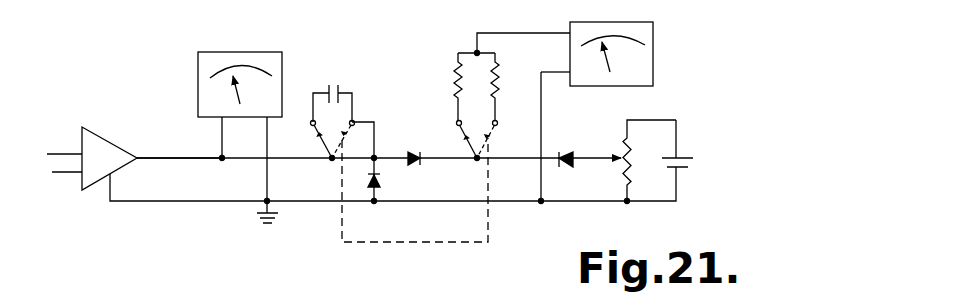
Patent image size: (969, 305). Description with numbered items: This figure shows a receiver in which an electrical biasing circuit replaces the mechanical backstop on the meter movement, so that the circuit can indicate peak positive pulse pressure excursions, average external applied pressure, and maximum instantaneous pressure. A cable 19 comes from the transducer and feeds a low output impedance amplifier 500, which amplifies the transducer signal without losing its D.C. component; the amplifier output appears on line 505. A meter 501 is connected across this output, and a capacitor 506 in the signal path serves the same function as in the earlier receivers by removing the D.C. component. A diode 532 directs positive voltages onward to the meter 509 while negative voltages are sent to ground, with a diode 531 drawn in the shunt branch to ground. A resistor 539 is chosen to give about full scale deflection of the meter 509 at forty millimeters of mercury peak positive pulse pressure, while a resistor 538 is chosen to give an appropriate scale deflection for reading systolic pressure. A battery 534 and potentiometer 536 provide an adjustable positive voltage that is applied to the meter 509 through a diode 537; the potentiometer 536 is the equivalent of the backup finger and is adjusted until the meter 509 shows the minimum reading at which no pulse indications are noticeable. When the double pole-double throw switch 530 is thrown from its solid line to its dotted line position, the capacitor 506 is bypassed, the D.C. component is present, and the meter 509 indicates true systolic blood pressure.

The cable 19 is at (72, 157).
The low output impedance amplifier 500 is at (105, 148).
The meter 501 is at (192, 71).
The output line 505 is at (137, 157).
The capacitor 506 is at (338, 93).
The meter 509 is at (660, 59).
The double pole-double throw switch 530 is at (332, 222).
The diode 531 is at (383, 182).
The diode 532 is at (424, 130).
The battery 534 is at (683, 158).
The potentiometer 536 is at (625, 168).
The diode 537 is at (563, 151).
The resistor 538 is at (496, 95).
The resistor 539 is at (457, 80).